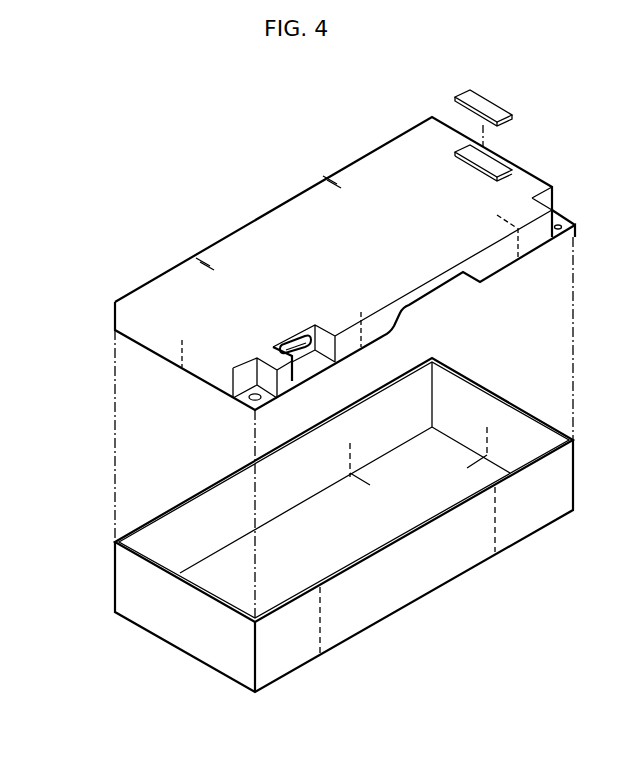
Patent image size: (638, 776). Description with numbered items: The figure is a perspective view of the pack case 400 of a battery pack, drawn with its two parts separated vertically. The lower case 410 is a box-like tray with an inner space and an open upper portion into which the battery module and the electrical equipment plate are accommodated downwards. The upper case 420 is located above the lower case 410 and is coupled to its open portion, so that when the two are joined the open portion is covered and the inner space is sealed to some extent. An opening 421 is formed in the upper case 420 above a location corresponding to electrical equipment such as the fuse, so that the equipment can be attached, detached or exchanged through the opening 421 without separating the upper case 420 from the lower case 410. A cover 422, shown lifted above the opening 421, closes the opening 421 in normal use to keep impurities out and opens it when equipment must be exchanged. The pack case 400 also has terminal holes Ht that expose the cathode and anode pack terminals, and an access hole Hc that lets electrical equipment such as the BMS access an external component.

The pack case 400 is at (55, 317).
The lower case 410 is at (115, 573).
The upper case 420 is at (115, 321).
The opening 421 is at (494, 167).
The cover 422 is at (494, 110).
The terminal hole Ht is at (248, 399).
The access hole Hc is at (307, 350).